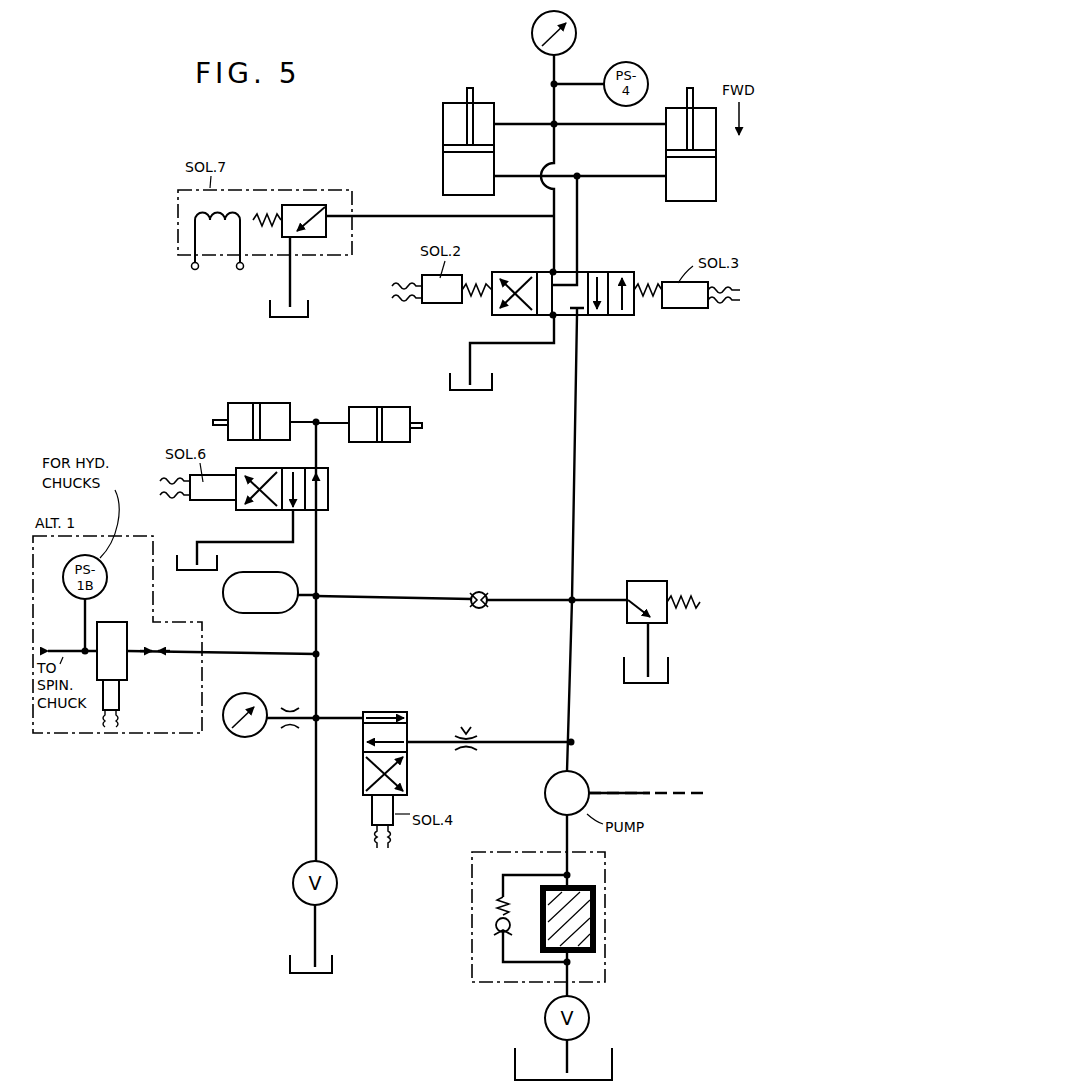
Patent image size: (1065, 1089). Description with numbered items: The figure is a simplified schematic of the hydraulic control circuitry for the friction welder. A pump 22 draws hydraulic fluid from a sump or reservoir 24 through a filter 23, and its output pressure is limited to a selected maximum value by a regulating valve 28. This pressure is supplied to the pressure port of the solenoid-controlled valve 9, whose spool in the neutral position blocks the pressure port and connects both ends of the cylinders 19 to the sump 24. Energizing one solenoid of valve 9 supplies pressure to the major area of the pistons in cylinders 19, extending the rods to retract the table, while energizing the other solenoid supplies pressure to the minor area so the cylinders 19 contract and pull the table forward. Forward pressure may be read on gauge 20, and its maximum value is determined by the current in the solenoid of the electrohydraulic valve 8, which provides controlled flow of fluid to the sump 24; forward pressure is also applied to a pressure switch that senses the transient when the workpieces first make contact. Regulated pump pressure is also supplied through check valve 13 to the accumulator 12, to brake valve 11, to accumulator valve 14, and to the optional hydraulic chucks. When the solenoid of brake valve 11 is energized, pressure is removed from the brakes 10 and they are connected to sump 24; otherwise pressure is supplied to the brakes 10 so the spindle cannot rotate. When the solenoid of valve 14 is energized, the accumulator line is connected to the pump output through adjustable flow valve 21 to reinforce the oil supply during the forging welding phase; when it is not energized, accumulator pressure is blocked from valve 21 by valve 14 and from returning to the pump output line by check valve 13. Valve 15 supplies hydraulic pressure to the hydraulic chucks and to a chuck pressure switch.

The electrohydraulic valve 8 is at (340, 192).
The solenoid-controlled valve 9 is at (624, 315).
The brakes 10 is at (348, 407).
The brake valve 11 is at (330, 488).
The accumulator 12 is at (288, 577).
The check valve 13 is at (482, 592).
The accumulator valve 14 is at (387, 712).
The valve 15 is at (127, 667).
The cylinders 19 is at (443, 172).
The gauge 20 is at (580, 34).
The adjustable flow valve 21 is at (472, 757).
The pump 22 is at (585, 778).
The filter 23 is at (594, 919).
The sump 24 is at (309, 305).
The regulating valve 28 is at (650, 587).